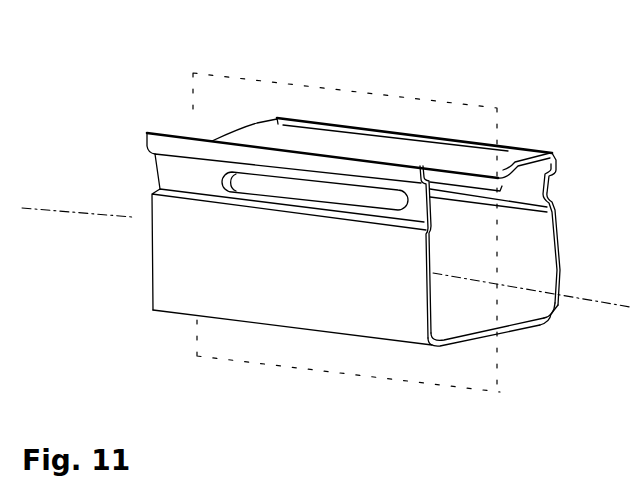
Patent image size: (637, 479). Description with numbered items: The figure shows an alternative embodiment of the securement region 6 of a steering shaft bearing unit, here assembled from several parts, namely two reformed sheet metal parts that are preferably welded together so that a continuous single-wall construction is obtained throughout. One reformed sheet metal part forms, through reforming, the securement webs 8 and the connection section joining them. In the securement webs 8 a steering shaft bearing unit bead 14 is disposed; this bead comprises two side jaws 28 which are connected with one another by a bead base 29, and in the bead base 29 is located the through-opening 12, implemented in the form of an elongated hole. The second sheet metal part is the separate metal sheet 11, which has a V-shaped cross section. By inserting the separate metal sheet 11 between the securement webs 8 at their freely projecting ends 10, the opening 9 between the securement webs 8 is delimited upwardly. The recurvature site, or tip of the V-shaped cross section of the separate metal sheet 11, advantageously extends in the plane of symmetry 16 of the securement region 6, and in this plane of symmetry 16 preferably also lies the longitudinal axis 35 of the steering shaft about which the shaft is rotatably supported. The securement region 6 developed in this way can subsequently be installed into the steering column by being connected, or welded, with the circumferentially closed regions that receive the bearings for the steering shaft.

The securement region 6 is at (352, 315).
The securement webs 8 is at (557, 187).
The opening 9 is at (523, 225).
The freely projecting ends 10 is at (165, 134).
The separate metal sheet 11 is at (513, 157).
The through-opening 12 is at (356, 192).
The steering shaft bearing unit bead 14 is at (177, 168).
The plane of symmetry 16 is at (467, 358).
The side jaws 28 is at (207, 200).
The bead base 29 is at (412, 203).
The longitudinal axis 35 is at (533, 288).